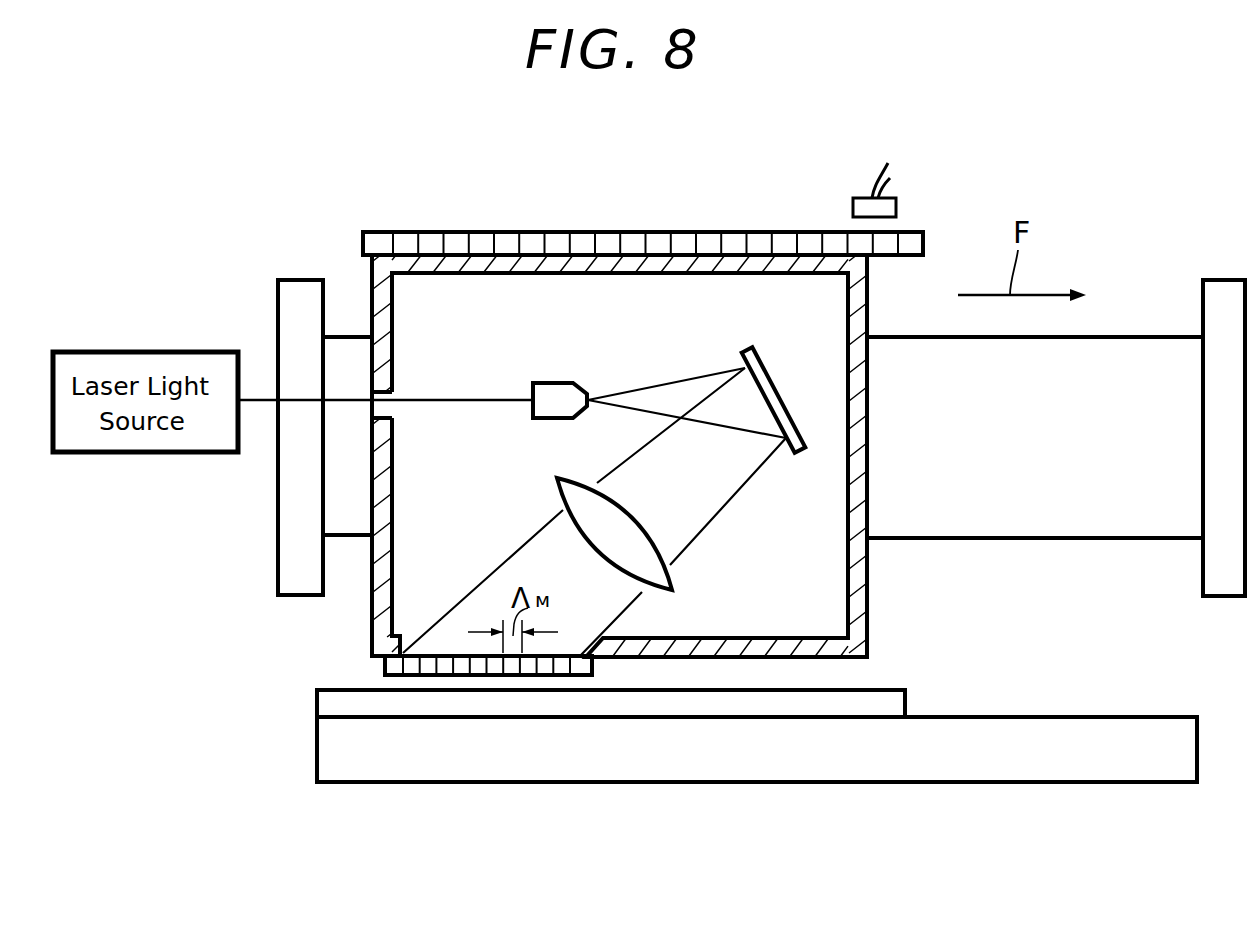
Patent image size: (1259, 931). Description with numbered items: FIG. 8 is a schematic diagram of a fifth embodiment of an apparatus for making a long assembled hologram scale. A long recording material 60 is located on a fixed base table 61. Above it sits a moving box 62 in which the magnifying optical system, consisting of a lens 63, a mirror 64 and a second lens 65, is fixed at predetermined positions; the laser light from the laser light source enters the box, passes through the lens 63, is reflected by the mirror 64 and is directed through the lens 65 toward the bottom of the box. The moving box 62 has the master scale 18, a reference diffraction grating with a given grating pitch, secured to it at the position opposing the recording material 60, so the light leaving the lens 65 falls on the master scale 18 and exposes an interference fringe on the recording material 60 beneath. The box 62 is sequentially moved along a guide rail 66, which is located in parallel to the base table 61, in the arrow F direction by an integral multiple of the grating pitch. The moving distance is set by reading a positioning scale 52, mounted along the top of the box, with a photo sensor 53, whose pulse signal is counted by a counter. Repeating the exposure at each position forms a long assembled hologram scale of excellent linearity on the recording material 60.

The master scale 18 is at (385, 664).
The positioning scale 52 is at (432, 232).
The photo sensor 53 is at (853, 205).
The recording material 60 is at (880, 690).
The fixed base table 61 is at (960, 783).
The moving box 62 is at (868, 598).
The lens 63 is at (557, 383).
The mirror 64 is at (762, 368).
The lens 65 is at (678, 568).
The guide rail 66 is at (919, 337).